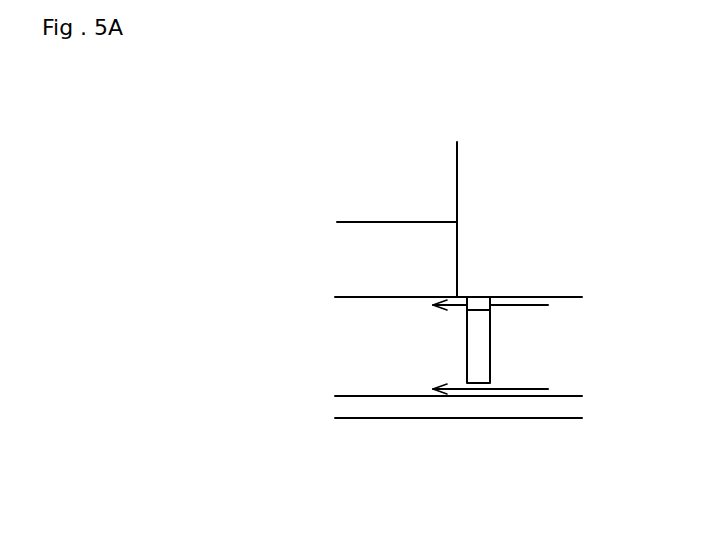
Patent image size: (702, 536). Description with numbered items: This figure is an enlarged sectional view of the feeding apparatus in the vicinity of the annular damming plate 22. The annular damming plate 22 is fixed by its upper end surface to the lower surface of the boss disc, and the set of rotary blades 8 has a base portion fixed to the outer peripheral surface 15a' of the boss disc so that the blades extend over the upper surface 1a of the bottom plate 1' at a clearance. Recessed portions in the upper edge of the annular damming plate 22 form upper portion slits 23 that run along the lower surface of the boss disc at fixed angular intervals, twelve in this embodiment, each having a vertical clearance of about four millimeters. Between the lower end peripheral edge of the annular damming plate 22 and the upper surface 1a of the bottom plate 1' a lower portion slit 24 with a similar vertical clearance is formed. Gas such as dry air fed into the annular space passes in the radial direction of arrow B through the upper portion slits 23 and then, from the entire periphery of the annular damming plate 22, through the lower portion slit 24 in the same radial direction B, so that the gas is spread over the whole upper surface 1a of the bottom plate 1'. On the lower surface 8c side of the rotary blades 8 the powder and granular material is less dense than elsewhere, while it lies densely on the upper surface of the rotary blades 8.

The rotary blades 8 is at (354, 221).
The outer peripheral surface of the boss disc 15a' is at (428, 205).
The lower surface of the rotary blades 8c is at (396, 298).
The annular damming plate 22 is at (467, 348).
The upper portion slits 23 is at (479, 300).
The lower portion slit 24 is at (480, 390).
The upper surface of the bottom plate 1a is at (360, 396).
The bottom plate 1' is at (458, 448).
The direction of gas feed (arrow B) B is at (514, 388).